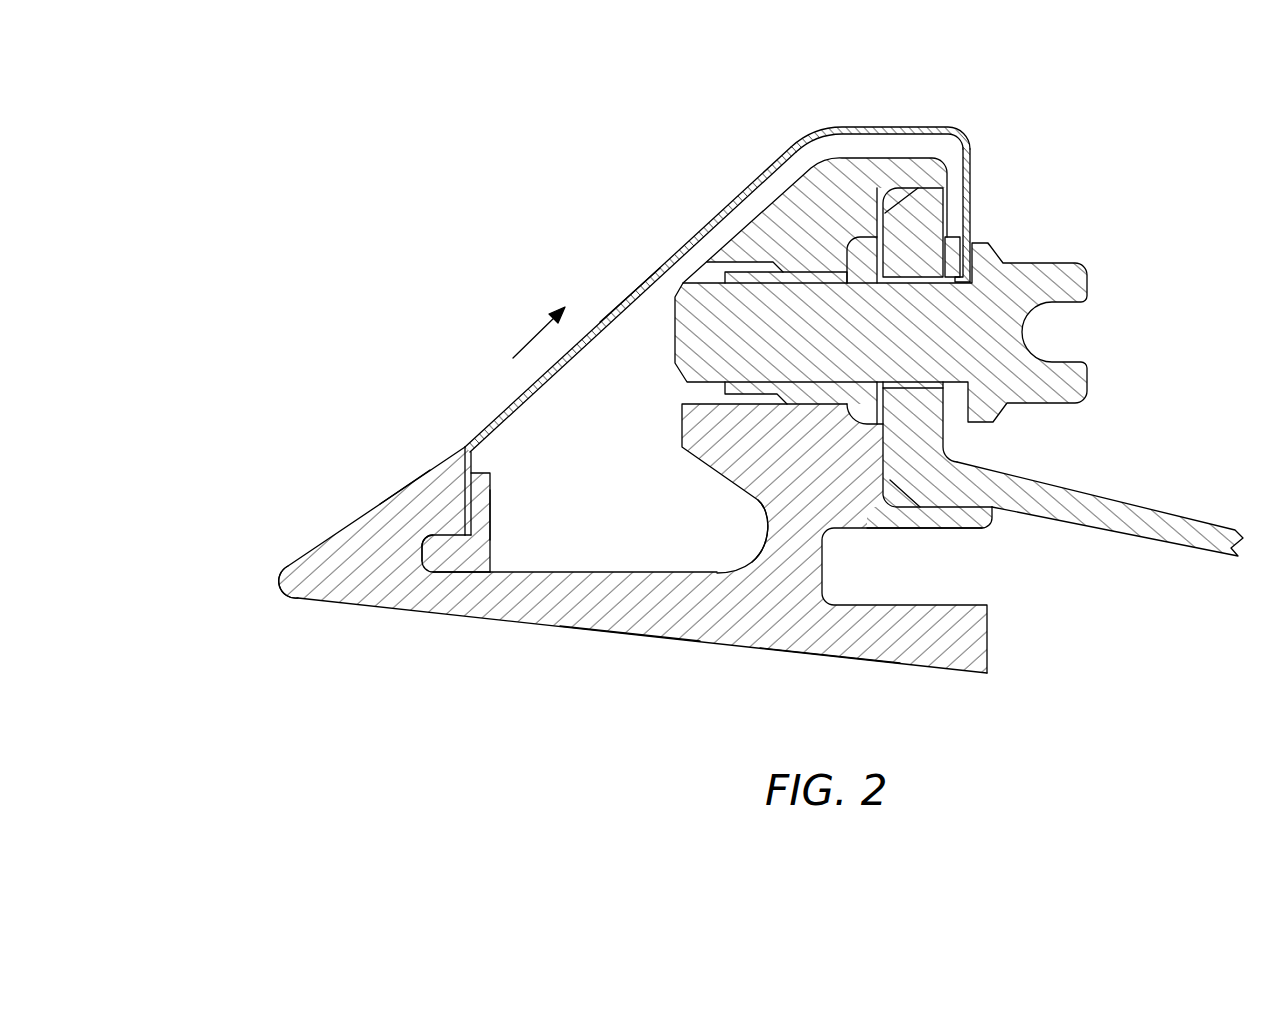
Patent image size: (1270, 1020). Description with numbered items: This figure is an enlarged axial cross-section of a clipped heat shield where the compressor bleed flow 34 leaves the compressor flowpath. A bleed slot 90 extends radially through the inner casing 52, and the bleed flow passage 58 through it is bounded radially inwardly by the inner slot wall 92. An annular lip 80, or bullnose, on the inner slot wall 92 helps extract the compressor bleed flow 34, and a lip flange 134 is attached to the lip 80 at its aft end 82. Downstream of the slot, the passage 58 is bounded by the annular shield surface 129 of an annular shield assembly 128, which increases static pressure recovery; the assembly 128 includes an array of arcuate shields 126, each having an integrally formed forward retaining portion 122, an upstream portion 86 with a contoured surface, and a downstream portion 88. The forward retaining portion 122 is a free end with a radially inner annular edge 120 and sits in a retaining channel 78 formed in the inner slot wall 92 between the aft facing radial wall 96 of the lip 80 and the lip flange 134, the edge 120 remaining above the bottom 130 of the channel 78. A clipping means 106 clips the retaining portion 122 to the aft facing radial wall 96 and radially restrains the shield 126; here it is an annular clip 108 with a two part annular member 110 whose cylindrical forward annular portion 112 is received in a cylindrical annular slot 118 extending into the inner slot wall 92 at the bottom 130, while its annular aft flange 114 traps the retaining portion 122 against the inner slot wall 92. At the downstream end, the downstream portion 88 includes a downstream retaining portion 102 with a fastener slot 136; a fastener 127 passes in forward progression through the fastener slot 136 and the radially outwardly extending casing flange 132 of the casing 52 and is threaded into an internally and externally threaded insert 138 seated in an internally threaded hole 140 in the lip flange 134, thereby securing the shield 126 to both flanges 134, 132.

The compressor bleed flow 34 is at (527, 340).
The inner casing 52 is at (1187, 517).
The bleed flow passage 58 is at (470, 430).
The retaining channel 78 is at (710, 500).
The annular lip 80 is at (615, 638).
The aft end 82 is at (810, 644).
The upstream portion 86 is at (672, 256).
The downstream portion 88 is at (957, 127).
The bleed slot 90 is at (268, 548).
The inner slot wall 92 is at (310, 552).
The aft facing radial wall 96 is at (473, 460).
The downstream retaining portion 102 is at (970, 193).
The clipping means 106 is at (578, 460).
The annular clip 108 is at (490, 553).
The two part annular member 110 is at (490, 513).
The forward annular portion 112 is at (477, 562).
The annular aft flange 114 is at (490, 487).
The annular slot 118 is at (418, 556).
The radially inner annular edge 120 is at (471, 536).
The forward retaining portion 122 is at (462, 506).
The arcuate shield 126 is at (970, 153).
The fastener 127 is at (1087, 284).
The annular shield assembly 128 is at (700, 203).
The annular shield surface 129 is at (633, 292).
The bottom 130 is at (592, 572).
The casing flange 132 is at (1047, 498).
The lip flange 134 is at (872, 512).
The fastener slot 136 is at (958, 300).
The threaded insert 138 is at (808, 265).
The internally threaded hole 140 is at (682, 390).